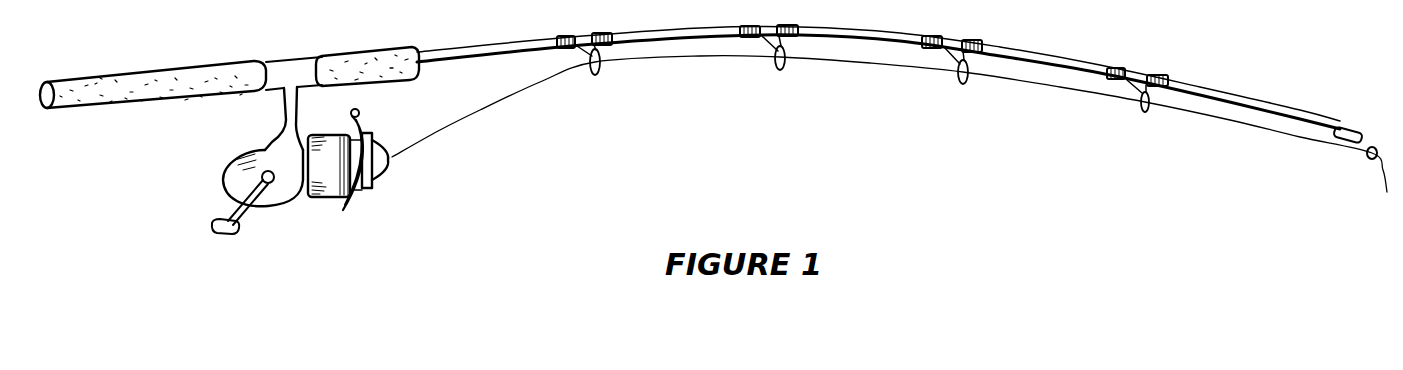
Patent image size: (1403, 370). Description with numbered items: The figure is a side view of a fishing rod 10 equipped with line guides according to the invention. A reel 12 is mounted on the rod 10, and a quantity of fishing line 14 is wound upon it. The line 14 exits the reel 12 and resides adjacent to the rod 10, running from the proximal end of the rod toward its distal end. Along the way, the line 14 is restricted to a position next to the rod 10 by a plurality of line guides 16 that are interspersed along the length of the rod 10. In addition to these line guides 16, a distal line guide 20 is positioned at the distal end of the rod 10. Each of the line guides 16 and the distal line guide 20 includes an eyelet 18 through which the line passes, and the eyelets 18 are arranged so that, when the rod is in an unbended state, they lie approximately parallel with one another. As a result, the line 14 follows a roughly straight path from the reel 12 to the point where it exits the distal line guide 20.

The fishing rod 10 is at (137, 100).
The reel 12 is at (232, 178).
The fishing line 14 is at (477, 110).
The line guides 16 is at (922, 82).
The eyelet 18 is at (1143, 135).
The distal line guide 20 is at (1345, 127).